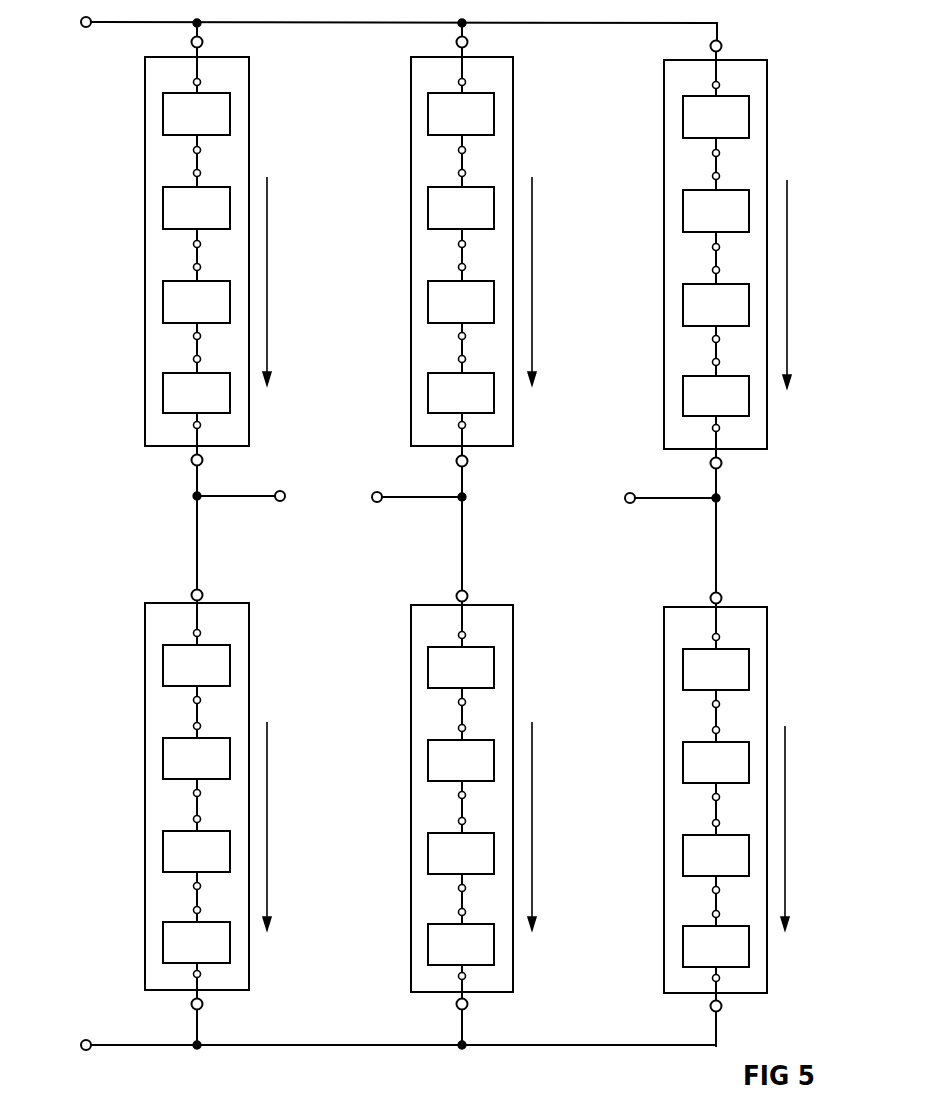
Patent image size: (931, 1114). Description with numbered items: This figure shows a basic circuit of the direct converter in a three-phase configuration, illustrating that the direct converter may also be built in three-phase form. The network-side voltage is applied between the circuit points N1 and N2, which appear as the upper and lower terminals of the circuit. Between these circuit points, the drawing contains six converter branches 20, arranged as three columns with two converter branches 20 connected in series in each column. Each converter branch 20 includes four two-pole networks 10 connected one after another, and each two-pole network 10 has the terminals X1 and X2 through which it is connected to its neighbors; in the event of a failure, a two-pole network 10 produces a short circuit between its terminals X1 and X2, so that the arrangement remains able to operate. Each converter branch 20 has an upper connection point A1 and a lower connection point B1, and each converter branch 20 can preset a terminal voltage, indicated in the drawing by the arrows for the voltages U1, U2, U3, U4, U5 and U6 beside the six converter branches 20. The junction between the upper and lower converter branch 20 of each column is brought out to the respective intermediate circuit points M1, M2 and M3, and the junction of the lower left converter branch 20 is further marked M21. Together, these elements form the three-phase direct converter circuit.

The two-pole network 10 is at (163, 115).
The converter branch 20 is at (249, 72).
The terminal X1 is at (473, 566).
The terminal X2 is at (473, 496).
The module input terminal A1 is at (192, 42).
The module output terminal B1 is at (202, 462).
The circuit point N1 is at (85, 39).
The circuit point N2 is at (87, 1029).
The intermediate tap M1 is at (293, 513).
The intermediate tap M2 is at (366, 513).
The intermediate tap M3 is at (620, 514).
The intermediate node M21 is at (145, 558).
The module voltage U1 is at (282, 281).
The module voltage U2 is at (282, 826).
The module voltage U3 is at (547, 826).
The module voltage U4 is at (547, 281).
The module voltage U5 is at (802, 284).
The module voltage U6 is at (798, 828).